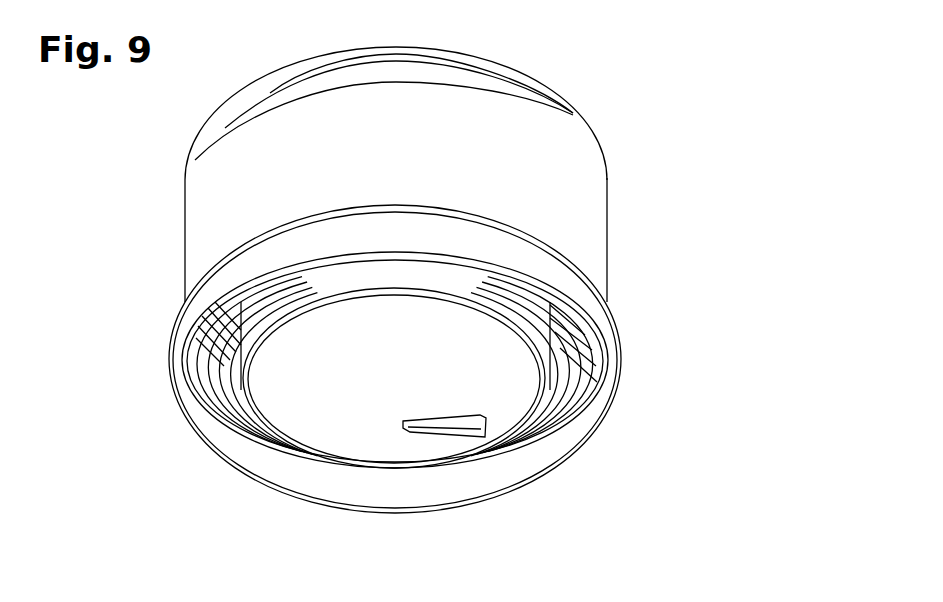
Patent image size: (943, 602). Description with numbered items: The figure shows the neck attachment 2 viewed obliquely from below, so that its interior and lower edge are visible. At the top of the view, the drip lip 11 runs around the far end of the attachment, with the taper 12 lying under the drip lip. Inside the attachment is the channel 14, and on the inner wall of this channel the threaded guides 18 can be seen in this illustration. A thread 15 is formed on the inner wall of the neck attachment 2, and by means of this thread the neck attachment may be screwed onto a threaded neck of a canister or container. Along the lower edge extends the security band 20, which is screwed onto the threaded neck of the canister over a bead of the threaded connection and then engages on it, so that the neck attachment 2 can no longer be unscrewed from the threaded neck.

The neck attachment 2 is at (580, 212).
The drip lip 11 is at (477, 60).
The taper under the drip lip 12 is at (387, 72).
The channel in neck attachment 14 is at (295, 400).
The thread on cap of the neck attachment 15 is at (570, 363).
The threaded guide on the inside of the channel 18 is at (454, 425).
The security band under the neck attachment 20 is at (520, 470).